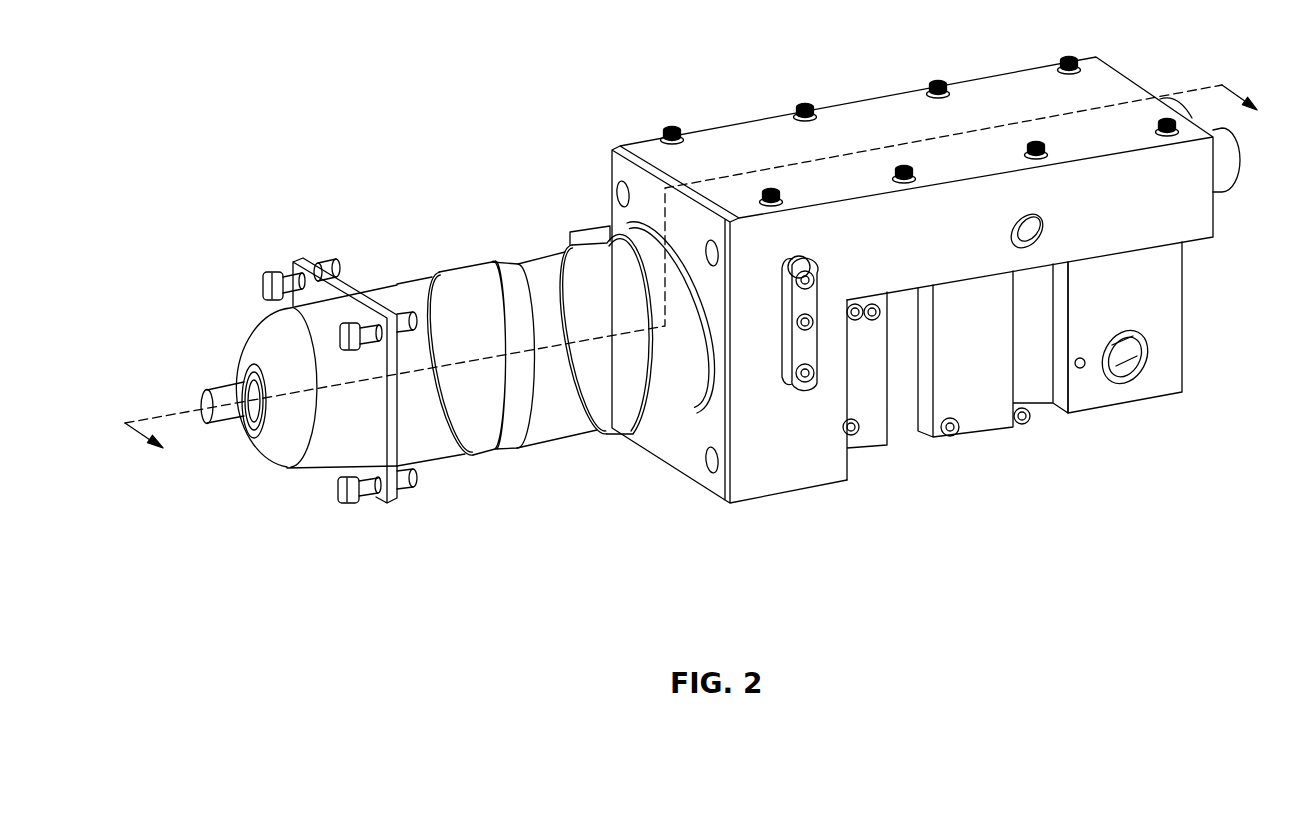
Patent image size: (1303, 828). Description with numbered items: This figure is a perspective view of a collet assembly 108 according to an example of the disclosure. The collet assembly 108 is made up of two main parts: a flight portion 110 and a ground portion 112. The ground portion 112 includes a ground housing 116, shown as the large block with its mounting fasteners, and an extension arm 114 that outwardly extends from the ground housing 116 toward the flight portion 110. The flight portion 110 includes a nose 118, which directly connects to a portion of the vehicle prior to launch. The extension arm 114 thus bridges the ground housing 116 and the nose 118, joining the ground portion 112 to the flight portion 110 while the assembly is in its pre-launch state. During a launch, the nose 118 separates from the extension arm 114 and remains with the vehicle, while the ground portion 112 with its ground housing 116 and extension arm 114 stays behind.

The collet assembly 108 is at (223, 114).
The flight portion 110 is at (388, 530).
The ground portion 112 is at (1238, 447).
The extension arm 114 is at (461, 263).
The ground housing 116 is at (1115, 410).
The nose 118 is at (258, 343).